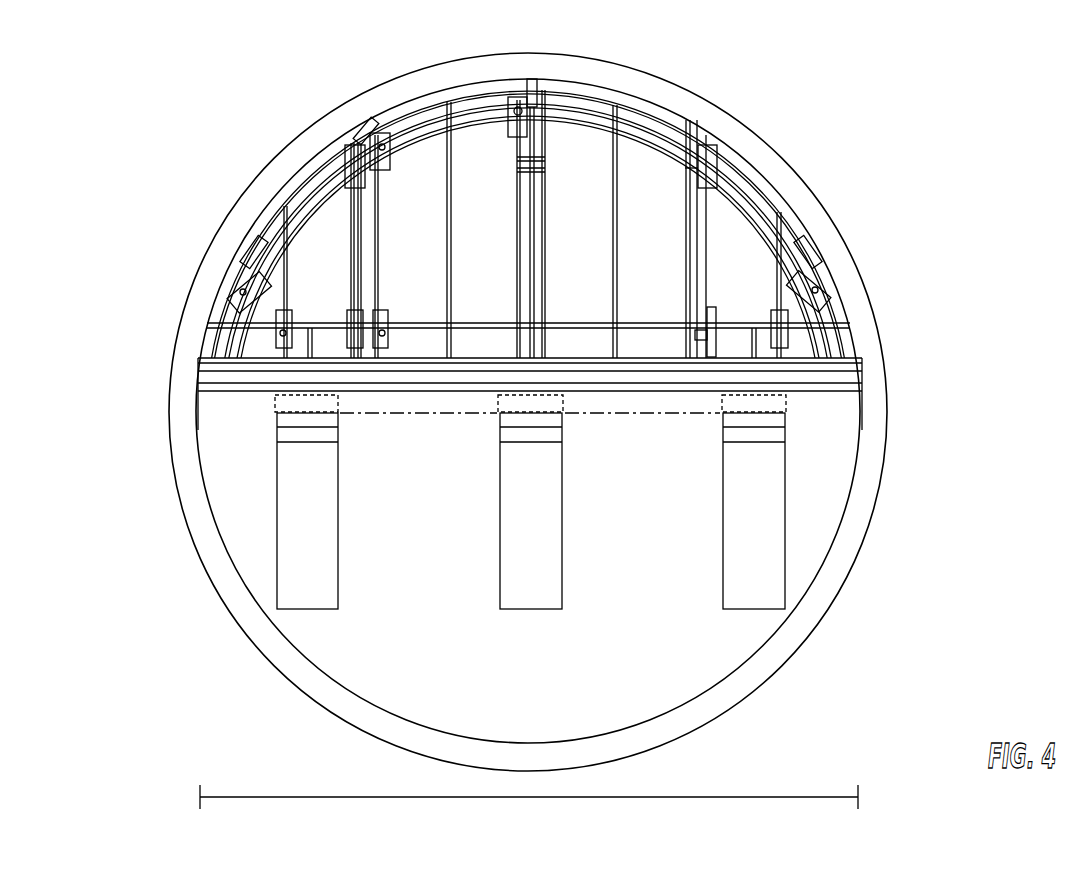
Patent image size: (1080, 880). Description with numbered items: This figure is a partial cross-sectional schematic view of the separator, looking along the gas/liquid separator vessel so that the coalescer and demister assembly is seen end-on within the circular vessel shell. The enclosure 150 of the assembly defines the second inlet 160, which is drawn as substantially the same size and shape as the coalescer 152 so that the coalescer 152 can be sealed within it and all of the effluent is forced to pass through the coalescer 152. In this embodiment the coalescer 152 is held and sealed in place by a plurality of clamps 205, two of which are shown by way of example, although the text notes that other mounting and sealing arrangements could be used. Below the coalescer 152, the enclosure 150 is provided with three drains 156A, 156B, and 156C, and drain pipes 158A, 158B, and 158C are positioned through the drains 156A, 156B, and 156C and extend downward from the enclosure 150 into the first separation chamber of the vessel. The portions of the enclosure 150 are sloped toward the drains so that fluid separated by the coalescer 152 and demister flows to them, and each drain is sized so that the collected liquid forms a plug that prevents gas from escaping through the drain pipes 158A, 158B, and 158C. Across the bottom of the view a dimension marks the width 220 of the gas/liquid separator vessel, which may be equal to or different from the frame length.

The second inlet 160 is at (800, 203).
The coalescer 152 is at (670, 112).
The clamps 205 is at (249, 238).
The enclosure 150 is at (858, 374).
The first drain 156A is at (296, 393).
The second drain 156B is at (540, 385).
The third drain 156C is at (765, 406).
The first drain pipe 158A is at (280, 475).
The second drain pipe 158B is at (551, 478).
The third drain pipe 158C is at (785, 478).
The width 220 is at (529, 811).